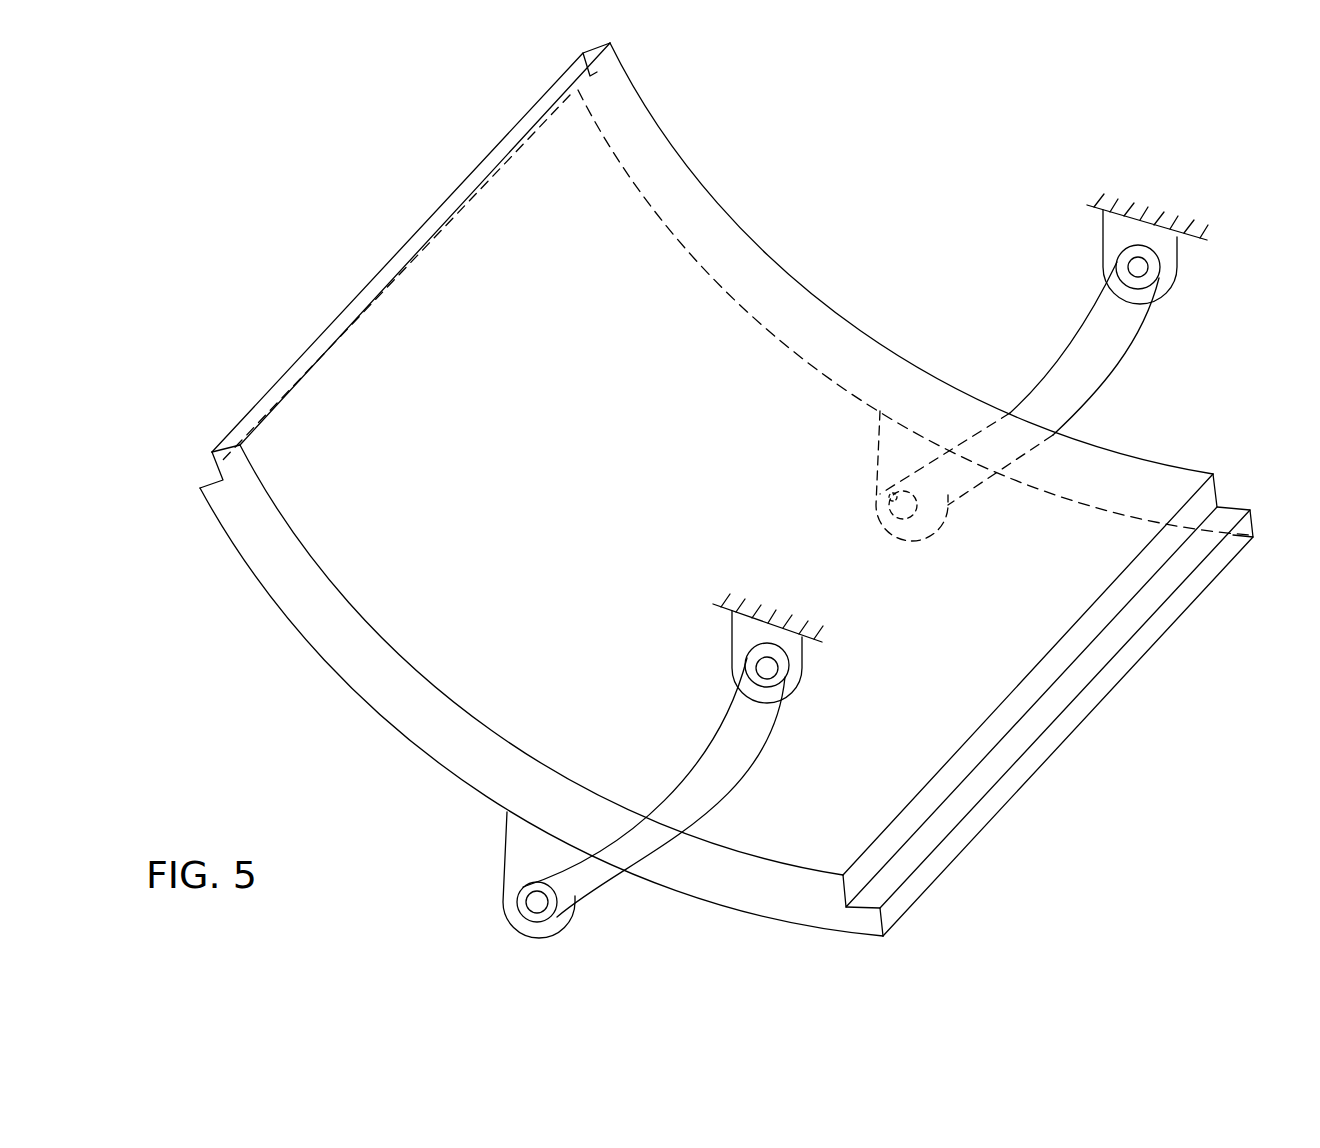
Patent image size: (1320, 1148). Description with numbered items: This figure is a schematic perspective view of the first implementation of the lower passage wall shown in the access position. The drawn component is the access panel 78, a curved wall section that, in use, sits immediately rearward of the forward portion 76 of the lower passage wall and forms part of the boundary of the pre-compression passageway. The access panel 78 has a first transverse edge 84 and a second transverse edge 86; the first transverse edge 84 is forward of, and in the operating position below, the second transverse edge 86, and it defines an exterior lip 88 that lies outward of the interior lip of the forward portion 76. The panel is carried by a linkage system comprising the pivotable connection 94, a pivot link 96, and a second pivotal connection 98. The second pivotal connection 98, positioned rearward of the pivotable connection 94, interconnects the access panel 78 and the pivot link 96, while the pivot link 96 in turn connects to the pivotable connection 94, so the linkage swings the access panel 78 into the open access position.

The forward portion 76 is at (1118, 210).
The access panel 78 is at (636, 322).
The first transverse edge 84 is at (1020, 770).
The second transverse edge 86 is at (386, 240).
The exterior lip 88 is at (870, 923).
The pivotable connection 94 is at (1120, 255).
The pivot link 96 is at (1083, 375).
The second pivotal connection 98 is at (880, 495).